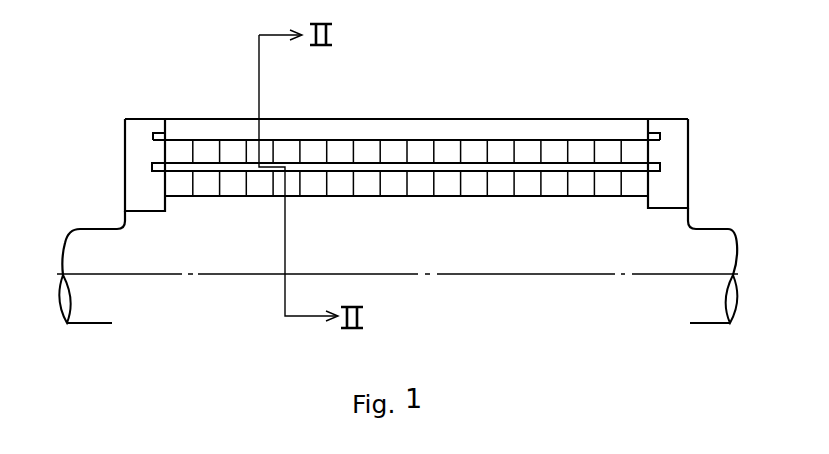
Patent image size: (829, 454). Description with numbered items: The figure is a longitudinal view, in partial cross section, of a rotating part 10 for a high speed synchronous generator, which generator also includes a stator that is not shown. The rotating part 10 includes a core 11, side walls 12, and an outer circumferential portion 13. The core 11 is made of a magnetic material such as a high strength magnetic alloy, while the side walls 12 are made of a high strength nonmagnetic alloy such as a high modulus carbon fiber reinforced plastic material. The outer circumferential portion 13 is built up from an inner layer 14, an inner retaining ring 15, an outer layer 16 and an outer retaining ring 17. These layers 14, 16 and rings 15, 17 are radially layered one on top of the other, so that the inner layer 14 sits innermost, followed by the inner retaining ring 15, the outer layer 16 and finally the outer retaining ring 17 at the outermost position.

The rotating part 10 is at (485, 100).
The core 11 is at (217, 258).
The side walls 12 is at (672, 130).
The outer circumferential portion 13 is at (530, 198).
The inner layer 14 is at (423, 183).
The inner retaining ring 15 is at (503, 170).
The outer layer 16 is at (392, 152).
The outer retaining ring 17 is at (315, 130).